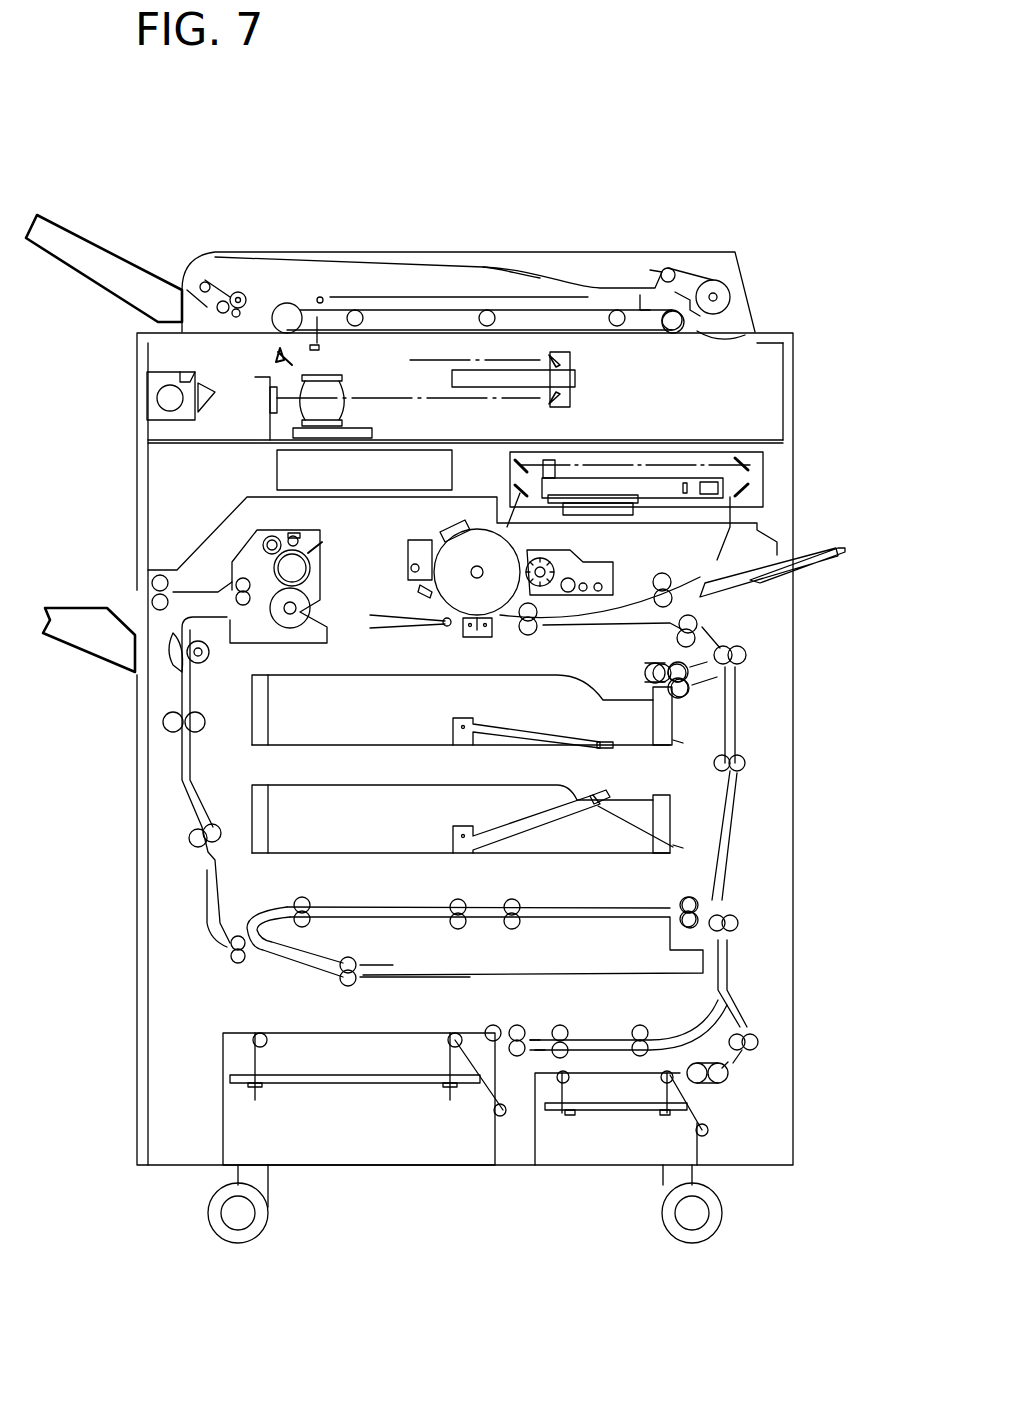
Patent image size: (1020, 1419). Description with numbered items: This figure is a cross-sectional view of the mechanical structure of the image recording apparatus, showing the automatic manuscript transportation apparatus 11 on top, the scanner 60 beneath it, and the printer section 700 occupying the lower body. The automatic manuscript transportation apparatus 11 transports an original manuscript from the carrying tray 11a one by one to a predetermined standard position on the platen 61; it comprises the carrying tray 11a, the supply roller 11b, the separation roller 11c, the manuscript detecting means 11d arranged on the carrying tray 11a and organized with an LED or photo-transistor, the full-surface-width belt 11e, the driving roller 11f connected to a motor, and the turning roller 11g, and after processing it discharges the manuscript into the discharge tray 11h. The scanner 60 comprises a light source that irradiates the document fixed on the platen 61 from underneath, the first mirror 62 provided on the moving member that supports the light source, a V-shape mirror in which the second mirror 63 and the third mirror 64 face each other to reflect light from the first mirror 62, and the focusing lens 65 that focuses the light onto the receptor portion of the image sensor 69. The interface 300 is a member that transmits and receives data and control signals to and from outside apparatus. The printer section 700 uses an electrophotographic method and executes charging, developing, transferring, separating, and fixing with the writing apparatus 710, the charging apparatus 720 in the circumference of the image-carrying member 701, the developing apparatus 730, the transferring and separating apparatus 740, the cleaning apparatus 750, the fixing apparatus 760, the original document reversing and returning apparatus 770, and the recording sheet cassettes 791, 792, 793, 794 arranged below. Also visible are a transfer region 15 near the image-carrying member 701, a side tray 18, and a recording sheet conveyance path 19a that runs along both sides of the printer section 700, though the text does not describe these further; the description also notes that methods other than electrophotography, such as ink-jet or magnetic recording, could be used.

The automatic manuscript transportation apparatus 11 is at (440, 257).
The carrying tray 11a is at (63, 223).
The supply roller 11b is at (245, 290).
The separation roller 11c is at (205, 285).
The manuscript detecting means 11d is at (317, 340).
The full-surface-width belt 11e is at (642, 307).
The driving roller 11f is at (283, 290).
The turning roller 11g is at (700, 310).
The discharge tray 11h is at (487, 263).
The transfer unit 15 is at (527, 640).
The manual feed tray 18 is at (116, 605).
The sheet conveyance path 19a is at (182, 690).
The scanner 60 is at (793, 372).
The platen 61 is at (745, 335).
The first mirror 62 is at (265, 365).
The second mirror 63 is at (570, 362).
The third mirror 64 is at (570, 398).
The focusing lens 65 is at (347, 403).
The image sensor 69 is at (270, 395).
The interface 300 is at (277, 468).
The printer section 700 is at (747, 850).
The image-carrying member 701 is at (503, 548).
The writing apparatus 710 is at (782, 455).
The charging unit 720 is at (440, 523).
The developing apparatus 730 is at (640, 560).
The transferring and separating apparatus 740 is at (477, 633).
The cleaning apparatus 750 is at (407, 537).
The fixing apparatus 760 is at (310, 567).
The original document reversing and returning apparatus 770 is at (307, 940).
The recording sheet cassette 791 is at (325, 727).
The recording sheet cassette 792 is at (352, 830).
The recording sheet cassette 793 is at (340, 1137).
The recording sheet cassette 794 is at (590, 1135).